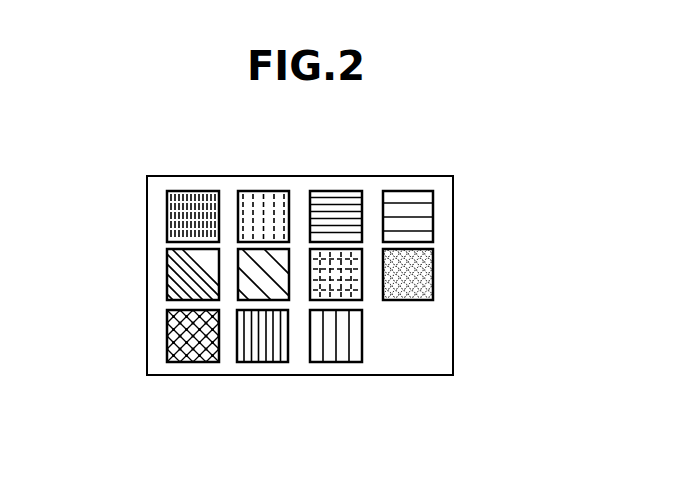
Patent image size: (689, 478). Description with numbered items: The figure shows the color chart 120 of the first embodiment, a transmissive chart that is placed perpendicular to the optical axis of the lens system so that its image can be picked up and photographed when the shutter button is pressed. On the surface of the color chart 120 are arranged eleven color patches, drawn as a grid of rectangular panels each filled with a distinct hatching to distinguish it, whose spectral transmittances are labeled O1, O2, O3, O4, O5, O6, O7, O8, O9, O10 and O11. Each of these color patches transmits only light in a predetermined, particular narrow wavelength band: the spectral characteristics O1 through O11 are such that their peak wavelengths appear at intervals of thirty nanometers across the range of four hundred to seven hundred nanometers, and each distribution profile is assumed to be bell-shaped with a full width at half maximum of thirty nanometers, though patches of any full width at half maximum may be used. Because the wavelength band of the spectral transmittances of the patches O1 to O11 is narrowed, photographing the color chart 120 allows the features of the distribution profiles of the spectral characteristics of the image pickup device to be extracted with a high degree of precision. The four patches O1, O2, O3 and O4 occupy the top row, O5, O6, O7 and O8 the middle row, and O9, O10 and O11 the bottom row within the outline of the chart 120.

The color chart 120 is at (453, 343).
The spectral transmittance of first color patch O1 is at (208, 191).
The spectral transmittance of second color patch O2 is at (279, 191).
The spectral transmittance of third color patch O3 is at (349, 191).
The spectral transmittance of fourth color patch O4 is at (419, 191).
The spectral transmittance of fifth color patch O5 is at (167, 290).
The spectral transmittance of sixth color patch O6 is at (238, 292).
The spectral transmittance of seventh color patch O7 is at (361, 290).
The spectral transmittance of eighth color patch O8 is at (433, 274).
The spectral transmittance of ninth color patch O9 is at (167, 353).
The spectral transmittance of tenth color patch O10 is at (257, 362).
The spectral transmittance of eleventh color patch O11 is at (318, 362).